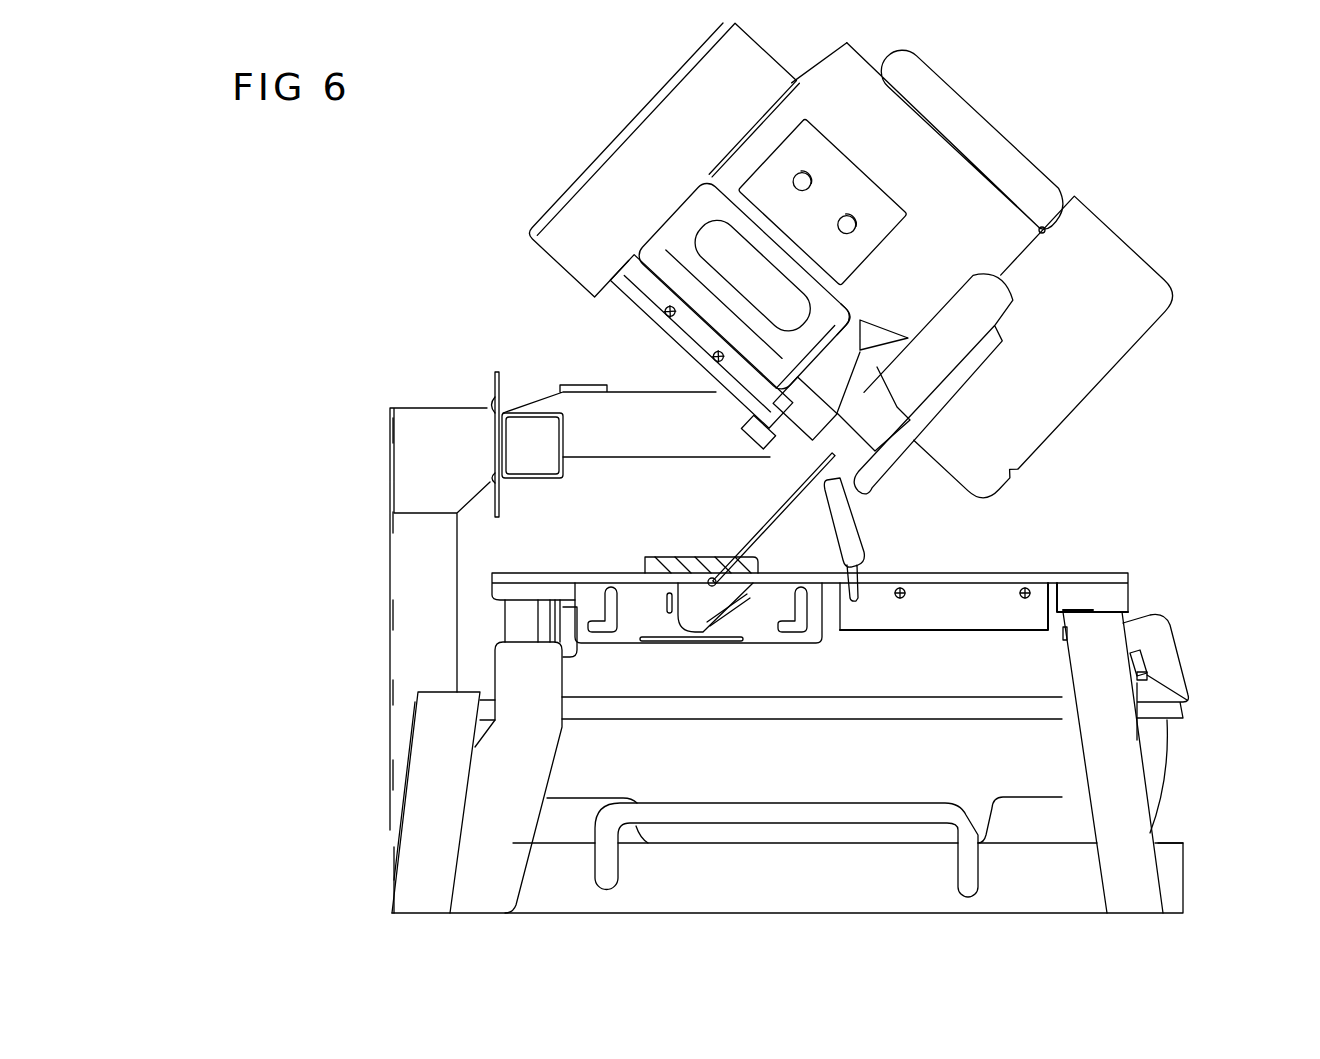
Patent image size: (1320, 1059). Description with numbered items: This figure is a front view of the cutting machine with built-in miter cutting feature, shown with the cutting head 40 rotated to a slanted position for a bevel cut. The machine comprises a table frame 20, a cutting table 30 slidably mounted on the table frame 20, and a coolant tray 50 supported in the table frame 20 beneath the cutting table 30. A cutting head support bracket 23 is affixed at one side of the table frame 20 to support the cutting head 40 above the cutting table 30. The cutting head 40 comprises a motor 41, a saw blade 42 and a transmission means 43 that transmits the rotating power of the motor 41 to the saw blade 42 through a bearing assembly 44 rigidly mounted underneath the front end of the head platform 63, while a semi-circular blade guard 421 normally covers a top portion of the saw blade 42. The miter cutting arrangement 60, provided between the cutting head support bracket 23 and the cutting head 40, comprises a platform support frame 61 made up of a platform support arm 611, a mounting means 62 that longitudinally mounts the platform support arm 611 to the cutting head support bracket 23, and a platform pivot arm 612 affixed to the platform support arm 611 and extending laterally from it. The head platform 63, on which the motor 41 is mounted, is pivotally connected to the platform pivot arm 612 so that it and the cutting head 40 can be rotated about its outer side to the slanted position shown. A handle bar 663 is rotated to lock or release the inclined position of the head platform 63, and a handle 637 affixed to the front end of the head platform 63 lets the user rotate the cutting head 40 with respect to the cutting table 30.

The table frame 20 is at (1205, 841).
The cutting head support bracket 23 is at (415, 577).
The cutting table 30 is at (1113, 561).
The cutting head 40 is at (869, 292).
The motor 41 is at (927, 168).
The saw blade 42 is at (718, 560).
The blade guard 421 is at (978, 318).
The transmission means 43 is at (589, 147).
The bearing assembly 44 is at (690, 352).
The coolant tray 50 is at (1150, 742).
The miter cutting arrangement 60 is at (662, 390).
The platform support frame 61 is at (636, 479).
The platform support arm 611 is at (533, 470).
The platform pivot arm 612 is at (623, 440).
The mounting means 62 is at (463, 392).
The head platform 63 is at (730, 286).
The handle 637 is at (835, 313).
The handle bar 663 is at (848, 528).